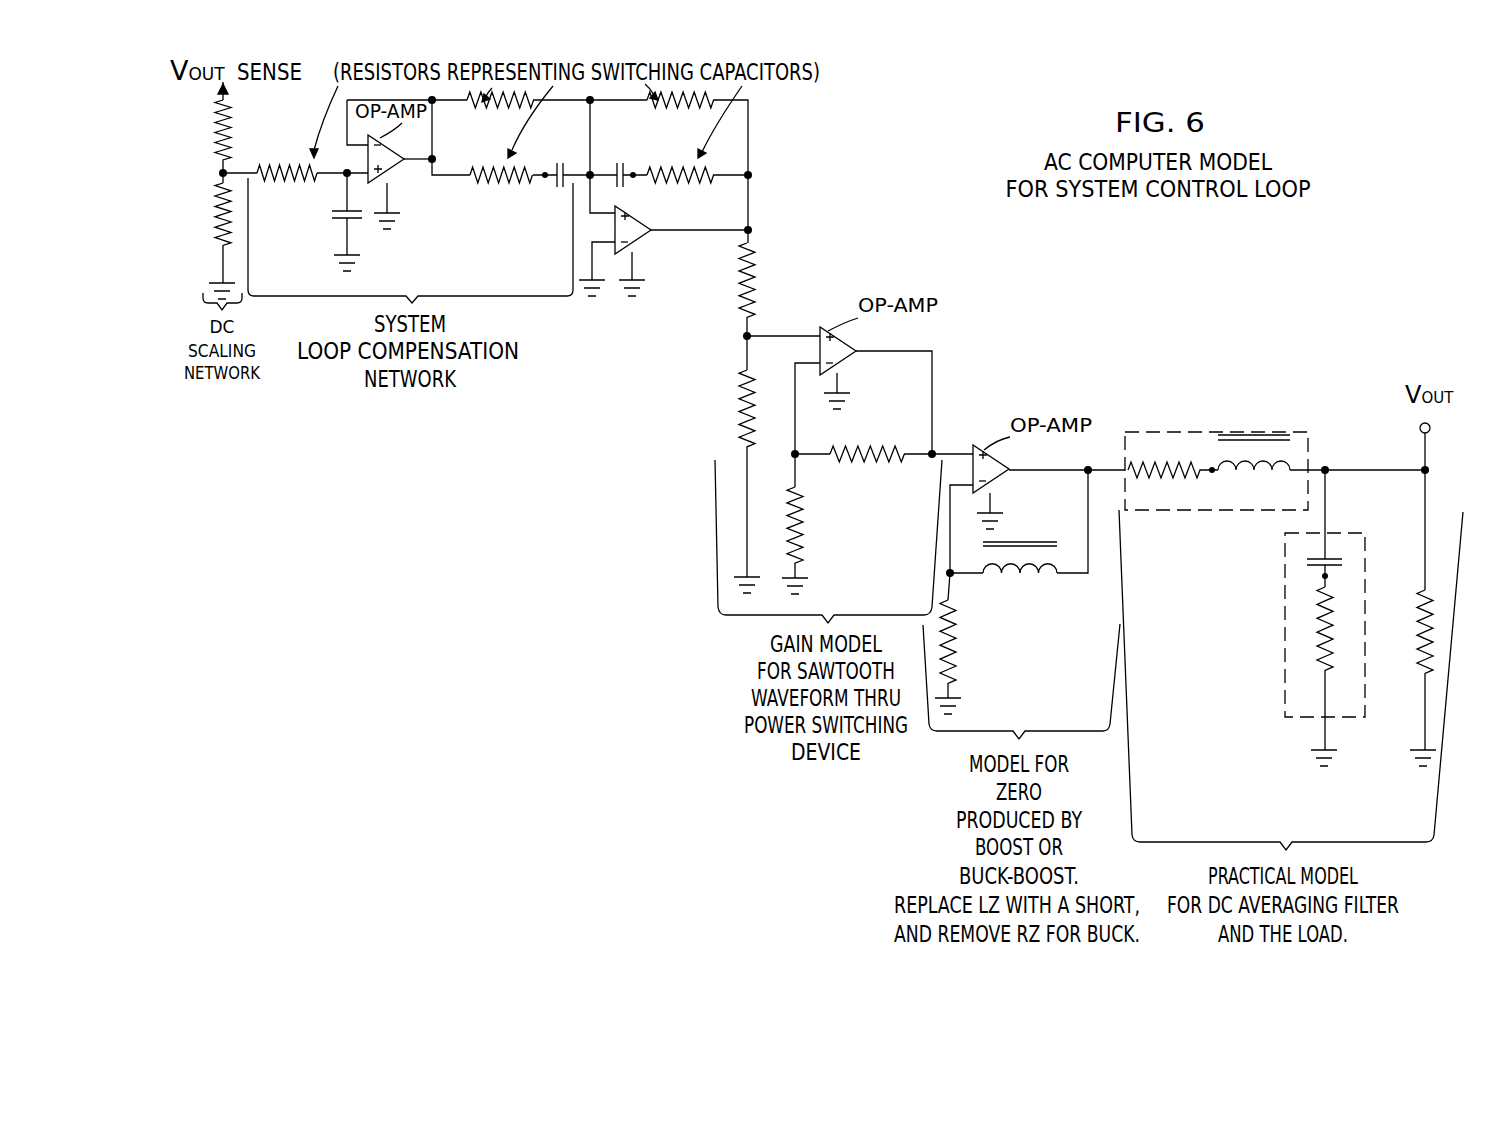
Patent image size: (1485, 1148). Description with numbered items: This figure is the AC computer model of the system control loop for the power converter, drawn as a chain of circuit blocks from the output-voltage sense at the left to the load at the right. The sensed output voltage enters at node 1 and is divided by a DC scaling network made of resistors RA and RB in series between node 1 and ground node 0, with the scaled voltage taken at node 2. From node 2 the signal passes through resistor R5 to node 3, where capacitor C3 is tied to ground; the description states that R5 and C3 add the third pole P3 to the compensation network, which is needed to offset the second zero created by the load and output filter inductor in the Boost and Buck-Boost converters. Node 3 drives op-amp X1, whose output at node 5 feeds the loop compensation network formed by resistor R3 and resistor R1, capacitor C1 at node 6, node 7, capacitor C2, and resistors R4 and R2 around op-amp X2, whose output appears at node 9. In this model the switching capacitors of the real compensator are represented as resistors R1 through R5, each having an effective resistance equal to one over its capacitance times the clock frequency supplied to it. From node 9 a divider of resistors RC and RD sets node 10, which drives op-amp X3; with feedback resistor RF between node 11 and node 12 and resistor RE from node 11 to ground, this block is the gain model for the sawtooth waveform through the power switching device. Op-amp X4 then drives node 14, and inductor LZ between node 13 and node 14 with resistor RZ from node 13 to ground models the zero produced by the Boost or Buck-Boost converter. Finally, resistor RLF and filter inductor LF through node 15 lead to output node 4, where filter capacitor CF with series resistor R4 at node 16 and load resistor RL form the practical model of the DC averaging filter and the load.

The ground node 0 is at (219, 280).
The Vout sense input node 1 is at (209, 93).
The scaled feedback node 2 is at (216, 174).
The op-amp X1 input node 3 is at (342, 163).
The output node 4 is at (1399, 461).
The op-amp X1 output node 5 is at (437, 149).
The node between R1 and C1 6 is at (542, 164).
The op-amp X2 inverting input node 7 is at (596, 91).
The op-amp X2 output node 9 is at (754, 218).
The RC/RD divider node 10 is at (761, 327).
The op-amp X3 inverting input node 11 is at (785, 454).
The op-amp X3 output node 12 is at (945, 444).
The op-amp X4 inverting input node 13 is at (960, 583).
The op-amp X4 output node 14 is at (1088, 461).
The node between RLF and LF 15 is at (1207, 461).
The node between CF and R4 16 is at (1338, 577).
The scaling resistor RA is at (218, 120).
The scaling resistor RB is at (217, 232).
The resistor R5 is at (314, 165).
The capacitor C3 is at (338, 216).
The op-amp X1 is at (396, 170).
The resistor R3 is at (497, 109).
The resistor R1 is at (500, 184).
The capacitor C1 is at (556, 188).
The capacitor C2 is at (616, 166).
The resistor R4 is at (688, 109).
The resistor R2 is at (690, 184).
The op-amp X2 is at (644, 240).
The resistor RC is at (760, 266).
The resistor RD is at (735, 396).
The op-amp X3 is at (848, 358).
The feedback resistor RF is at (862, 468).
The resistor RE is at (806, 520).
The op-amp X4 is at (1000, 478).
The inductor LZ (zero model) LZ is at (1028, 570).
The resistor RZ (zero model) RZ is at (957, 650).
The filter inductor resistance RLF is at (1173, 485).
The filter inductor LF is at (1321, 467).
The filter capacitor CF is at (1318, 568).
The load resistor RL is at (1428, 590).